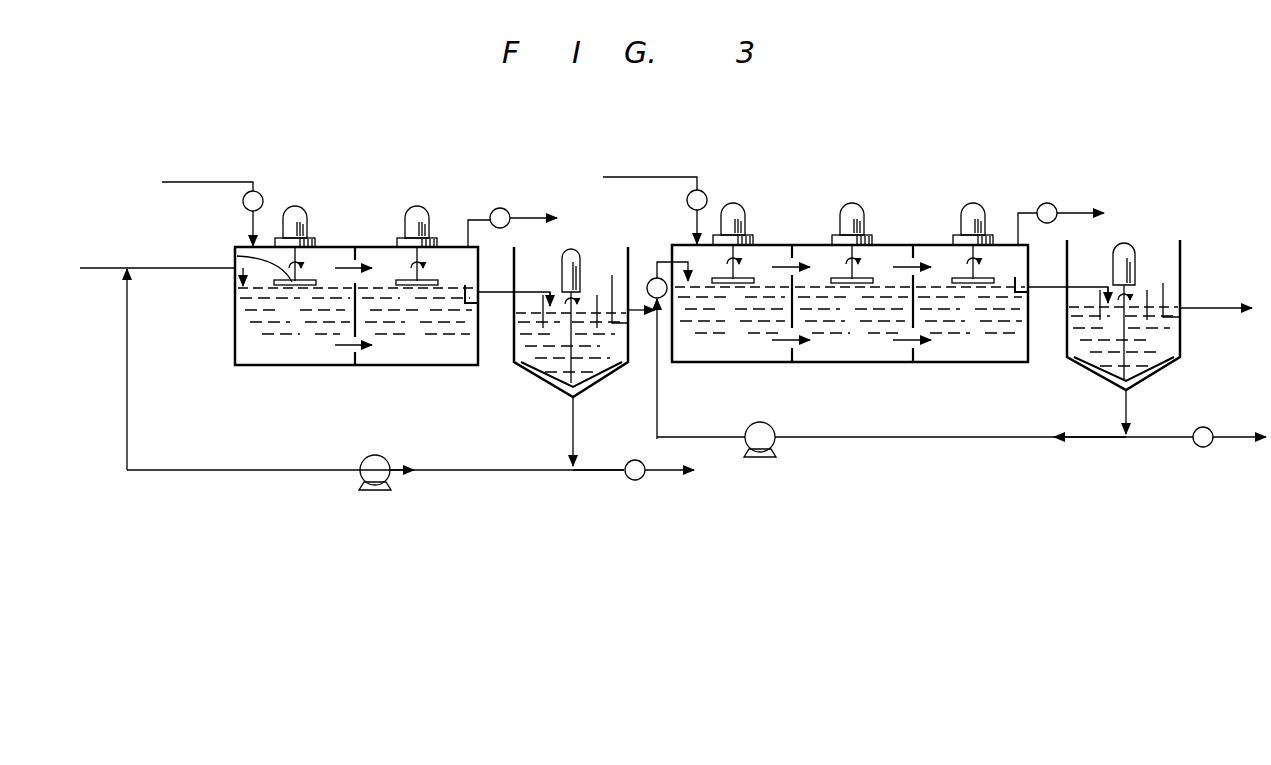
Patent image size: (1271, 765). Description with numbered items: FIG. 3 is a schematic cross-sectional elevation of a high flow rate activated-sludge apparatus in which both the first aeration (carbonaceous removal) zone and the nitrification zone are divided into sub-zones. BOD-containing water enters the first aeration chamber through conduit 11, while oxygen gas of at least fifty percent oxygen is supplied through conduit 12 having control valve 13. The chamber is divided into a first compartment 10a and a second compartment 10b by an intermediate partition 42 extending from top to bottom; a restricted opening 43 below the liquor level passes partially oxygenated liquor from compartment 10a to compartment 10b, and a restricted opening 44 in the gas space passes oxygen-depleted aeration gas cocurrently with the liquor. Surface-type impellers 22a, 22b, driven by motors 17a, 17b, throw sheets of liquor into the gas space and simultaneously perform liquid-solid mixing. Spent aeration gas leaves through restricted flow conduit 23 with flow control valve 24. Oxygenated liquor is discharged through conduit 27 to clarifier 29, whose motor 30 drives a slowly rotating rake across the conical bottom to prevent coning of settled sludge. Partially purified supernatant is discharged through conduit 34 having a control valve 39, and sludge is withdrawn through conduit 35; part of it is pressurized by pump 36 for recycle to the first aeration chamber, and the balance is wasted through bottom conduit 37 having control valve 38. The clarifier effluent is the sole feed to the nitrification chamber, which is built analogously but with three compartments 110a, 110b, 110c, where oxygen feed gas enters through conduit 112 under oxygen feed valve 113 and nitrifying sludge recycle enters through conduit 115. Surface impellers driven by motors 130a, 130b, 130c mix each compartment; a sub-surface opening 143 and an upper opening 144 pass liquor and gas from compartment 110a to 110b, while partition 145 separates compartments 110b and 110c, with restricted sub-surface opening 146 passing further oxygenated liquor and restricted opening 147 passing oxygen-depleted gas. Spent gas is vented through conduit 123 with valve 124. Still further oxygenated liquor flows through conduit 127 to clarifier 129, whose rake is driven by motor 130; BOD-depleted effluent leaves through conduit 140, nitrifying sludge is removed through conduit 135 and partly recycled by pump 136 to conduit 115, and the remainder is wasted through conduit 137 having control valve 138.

The first compartment 10a is at (247, 351).
The second compartment 10b is at (430, 360).
The conduit 11 is at (180, 267).
The conduit 12 is at (222, 181).
The control valve 13 is at (243, 203).
The agitator 17a is at (296, 207).
The agitator 17b is at (417, 207).
The surface-type impeller 22a is at (238, 254).
The surface-type impeller 22b is at (431, 283).
The restricted flow conduit 23 is at (468, 222).
The flow control valve 24 is at (506, 211).
The discharge conduit 27 is at (498, 290).
The clarifier 29 is at (530, 334).
The motor 30 is at (563, 262).
The conduit 34 is at (657, 262).
The conduit 35 is at (484, 468).
The pump 36 is at (384, 457).
The bottom conduit 37 is at (611, 468).
The control valve 38 is at (635, 459).
The valve 39 is at (652, 278).
The intermediate partition 42 is at (356, 300).
The restricted opening 43 is at (356, 356).
The restricted opening 44 is at (353, 264).
The first compartment 110a is at (702, 357).
The second compartment 110b is at (845, 360).
The third compartment 110c is at (960, 357).
The conduit 112 is at (656, 176).
The oxygen feed valve 113 is at (706, 194).
The conduit 115 is at (712, 437).
The vent line 123 is at (1020, 212).
The vent valve 124 is at (1058, 211).
The conduit 127 is at (1042, 289).
The clarifier 129 is at (1170, 346).
The settler agitator 130 is at (1124, 246).
The agitator 130a is at (740, 206).
The agitator 130b is at (858, 206).
The agitator 130c is at (975, 206).
The conduit 135 is at (1105, 438).
The pump 136 is at (776, 428).
The conduit 137 is at (1150, 438).
The control valve 138 is at (1210, 427).
The conduit 140 is at (1190, 310).
The lower opening 143 is at (792, 352).
The upper opening 144 is at (790, 262).
The partition 145 is at (912, 322).
The restricted sub-surface opening 146 is at (913, 350).
The restricted opening 147 is at (912, 264).